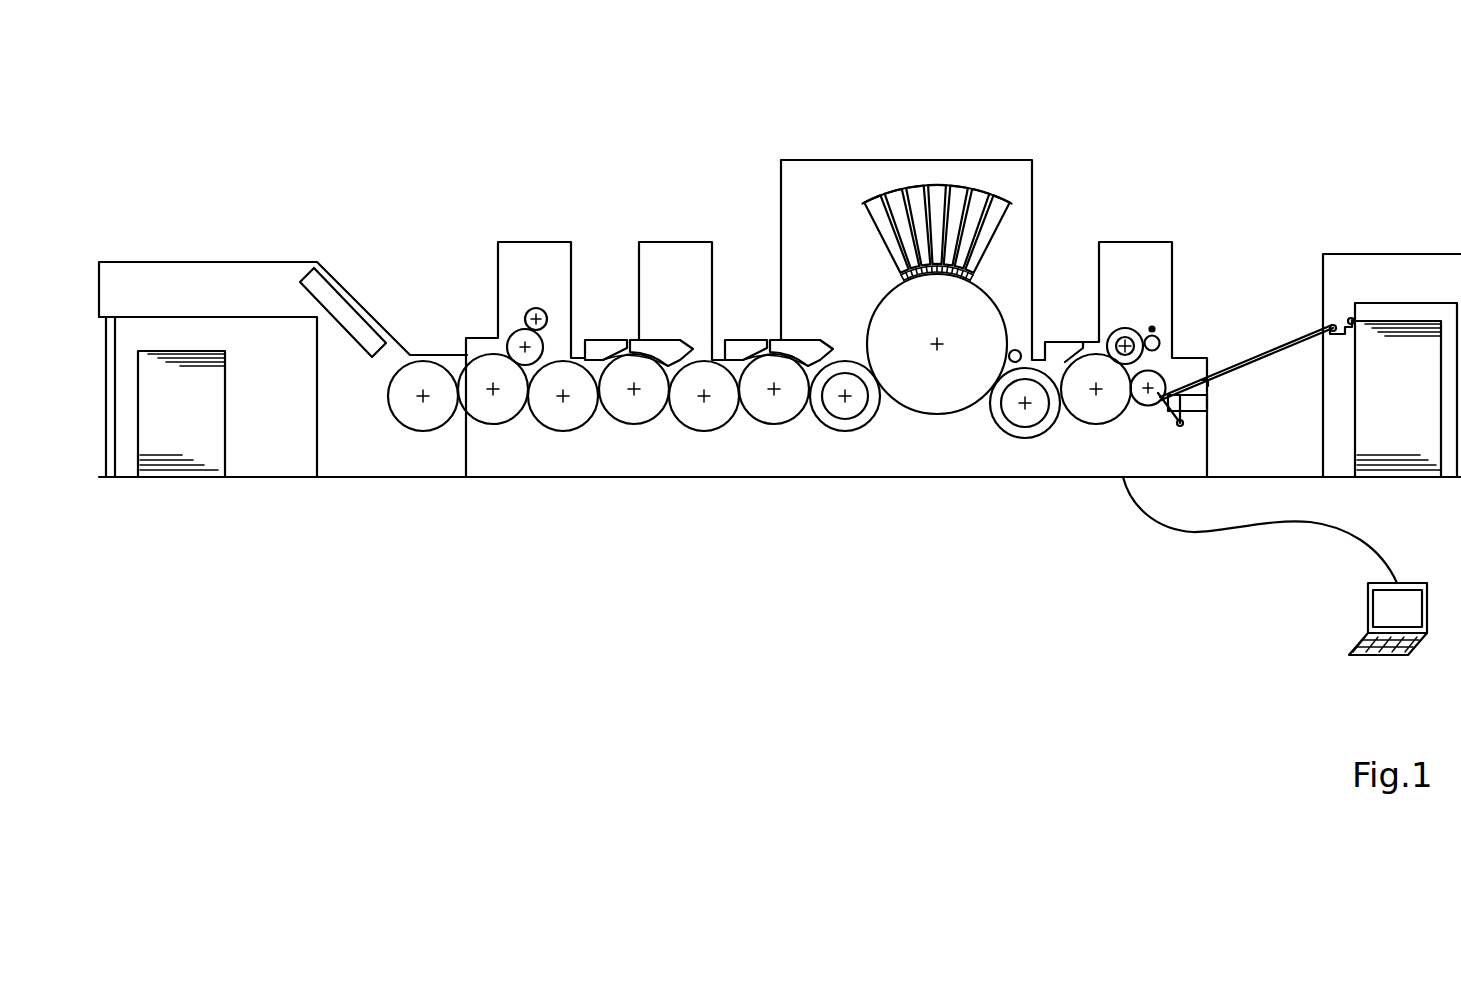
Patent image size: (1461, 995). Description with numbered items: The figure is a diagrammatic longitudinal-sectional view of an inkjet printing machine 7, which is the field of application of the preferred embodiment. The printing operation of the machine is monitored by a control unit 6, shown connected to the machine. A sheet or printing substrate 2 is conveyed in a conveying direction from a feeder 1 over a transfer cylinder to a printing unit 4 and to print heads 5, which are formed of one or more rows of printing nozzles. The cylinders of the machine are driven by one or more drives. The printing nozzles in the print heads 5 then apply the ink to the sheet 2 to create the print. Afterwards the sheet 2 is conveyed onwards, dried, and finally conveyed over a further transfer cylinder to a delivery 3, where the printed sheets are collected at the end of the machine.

The feeder 1 is at (1420, 265).
The sheet or printing substrate 2 is at (990, 292).
The delivery 3 is at (155, 276).
The printing unit 4 is at (843, 158).
The print heads 5 is at (938, 185).
The control unit 6 is at (1368, 610).
The inkjet printing machine 7 is at (1253, 80).